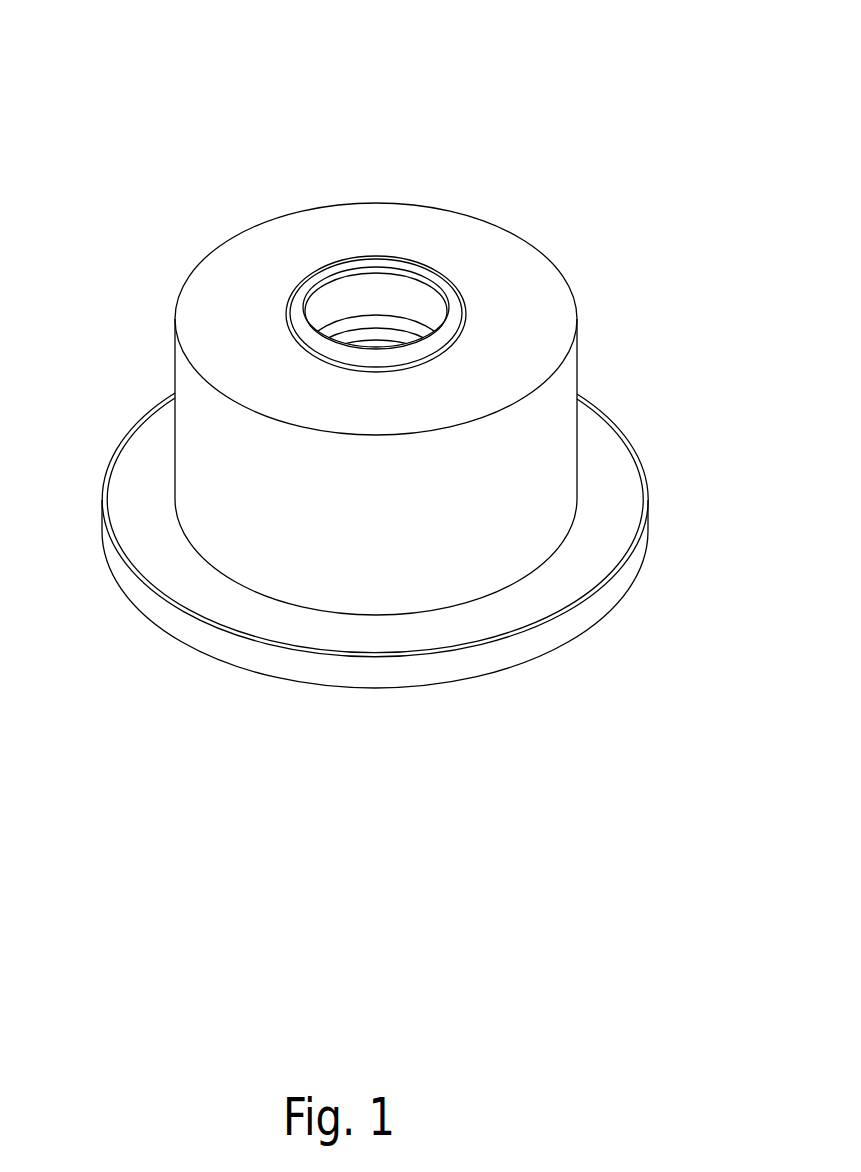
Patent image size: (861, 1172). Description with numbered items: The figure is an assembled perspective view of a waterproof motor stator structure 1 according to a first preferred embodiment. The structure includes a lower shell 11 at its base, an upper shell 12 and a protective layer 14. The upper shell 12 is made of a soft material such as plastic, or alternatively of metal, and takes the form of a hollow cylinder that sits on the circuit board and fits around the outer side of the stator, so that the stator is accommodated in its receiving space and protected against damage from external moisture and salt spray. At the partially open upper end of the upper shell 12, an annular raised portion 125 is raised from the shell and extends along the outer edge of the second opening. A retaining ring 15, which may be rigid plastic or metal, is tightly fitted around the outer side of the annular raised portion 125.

The waterproof motor stator structure 1 is at (584, 159).
The lower shell 11 is at (530, 647).
The upper shell 12 is at (230, 290).
The protective layer 14 is at (153, 455).
The retaining ring 15 is at (322, 273).
The annular raised portion 125 is at (386, 268).